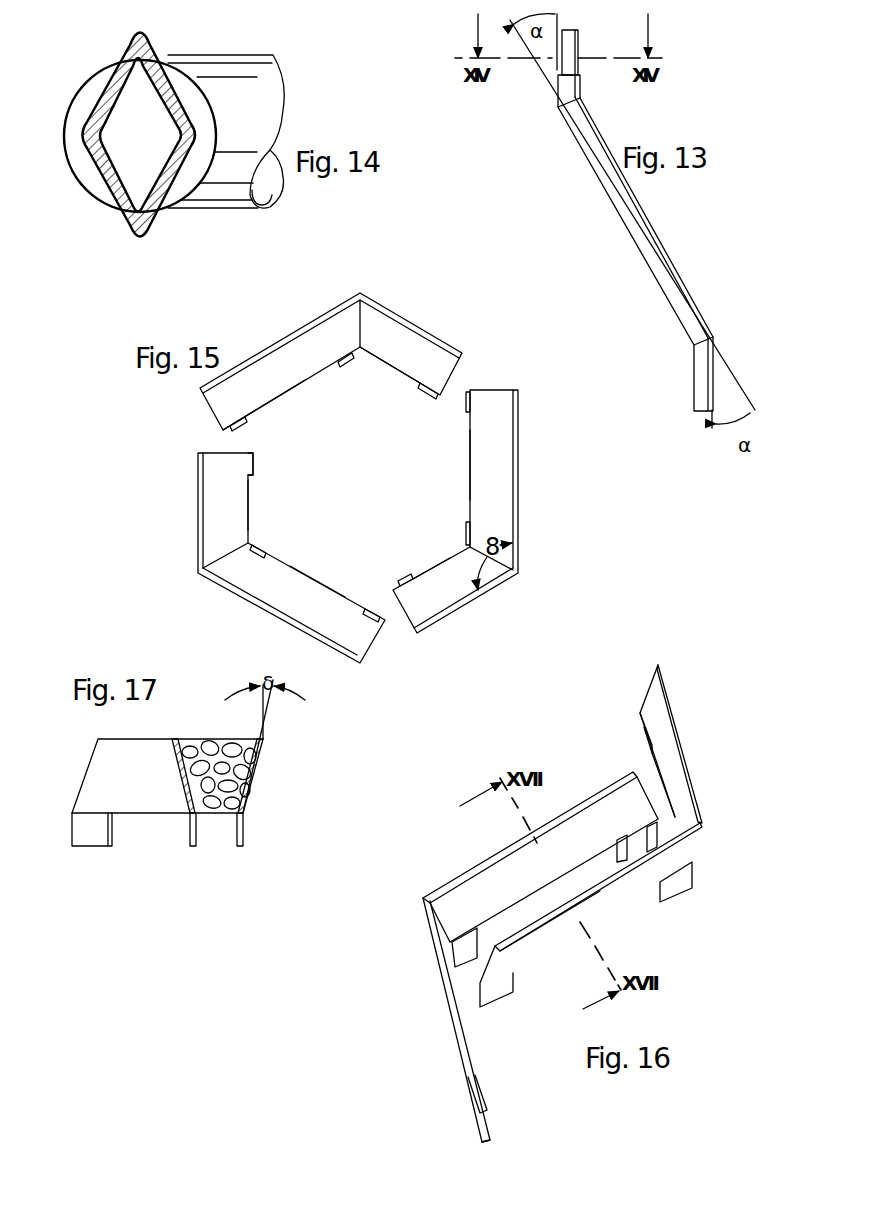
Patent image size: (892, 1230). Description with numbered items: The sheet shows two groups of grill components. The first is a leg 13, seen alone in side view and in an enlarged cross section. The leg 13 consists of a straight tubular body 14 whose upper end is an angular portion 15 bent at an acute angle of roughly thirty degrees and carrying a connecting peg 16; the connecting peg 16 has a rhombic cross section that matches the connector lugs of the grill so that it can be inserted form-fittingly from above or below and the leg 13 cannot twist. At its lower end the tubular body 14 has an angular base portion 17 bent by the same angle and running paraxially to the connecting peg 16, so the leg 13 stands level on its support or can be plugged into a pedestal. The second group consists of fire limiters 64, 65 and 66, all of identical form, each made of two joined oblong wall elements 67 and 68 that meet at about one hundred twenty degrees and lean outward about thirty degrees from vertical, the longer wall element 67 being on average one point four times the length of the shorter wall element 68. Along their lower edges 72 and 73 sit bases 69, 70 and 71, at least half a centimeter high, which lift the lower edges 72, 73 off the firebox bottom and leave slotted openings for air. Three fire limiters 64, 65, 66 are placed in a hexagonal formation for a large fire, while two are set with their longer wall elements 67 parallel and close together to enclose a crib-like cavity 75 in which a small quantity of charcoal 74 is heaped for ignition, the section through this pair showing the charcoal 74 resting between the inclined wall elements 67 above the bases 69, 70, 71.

In FIG. 13, the leg 13 is at (612, 208).
In FIG. 14, the tubular body 14 is at (219, 209).
In FIG. 13, the tubular body 14 is at (633, 230).
In FIG. 14, the angular portion 15 is at (80, 100).
In FIG. 13, the angular portion 15 is at (572, 90).
In FIG. 14, the connecting peg 16 is at (122, 60).
In FIG. 13, the connecting peg 16 is at (572, 42).
In FIG. 13, the angular base portion 17 is at (700, 388).
In FIG. 15, the fire limiter 64 is at (196, 553).
In FIG. 16, the fire limiter 64 is at (692, 848).
In FIG. 15, the fire limiter 65 is at (385, 300).
In FIG. 15, the fire limiter 66 is at (521, 487).
In FIG. 16, the fire limiter 66 is at (462, 872).
In FIG. 15, the wall element 67 is at (298, 348).
In FIG. 17, the wall element 67 is at (175, 760).
In FIG. 16, the wall element 67 is at (505, 870).
In FIG. 15, the wall element 68 is at (415, 340).
In FIG. 17, the wall element 68 is at (105, 777).
In FIG. 16, the wall element 68 is at (672, 722).
In FIG. 15, the base 69 is at (240, 424).
In FIG. 17, the base 69 is at (189, 832).
In FIG. 16, the base 69 is at (652, 838).
In FIG. 15, the base 70 is at (352, 356).
In FIG. 17, the base 70 is at (243, 832).
In FIG. 16, the base 70 is at (690, 873).
In FIG. 15, the base 71 is at (430, 396).
In FIG. 17, the base 71 is at (80, 832).
In FIG. 16, the base 71 is at (643, 722).
In FIG. 15, the lower edge 72 is at (315, 372).
In FIG. 16, the lower edge 72 is at (543, 950).
In FIG. 15, the lower edge 73 is at (385, 372).
In FIG. 16, the lower edge 73 is at (655, 765).
In FIG. 17, the charcoal 74 is at (212, 748).
In FIG. 16, the crib-like cavity 75 is at (604, 812).